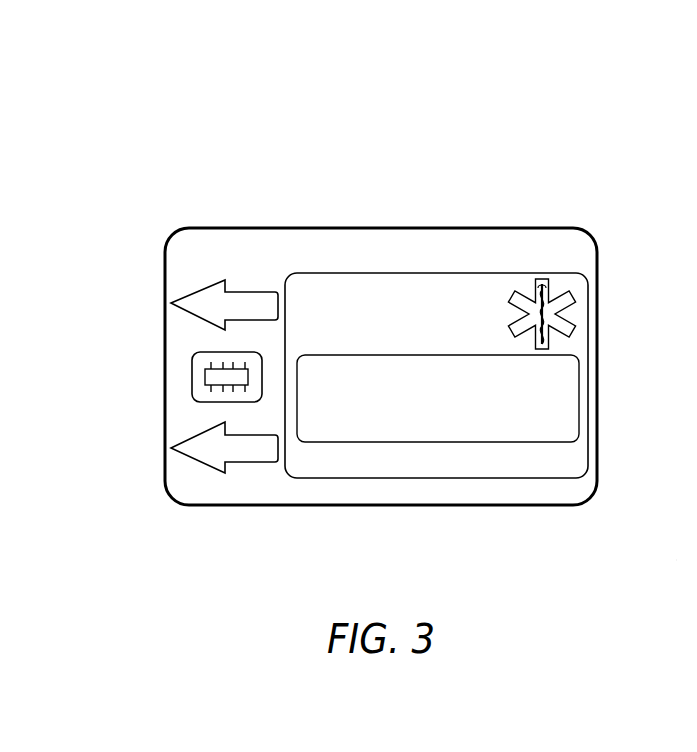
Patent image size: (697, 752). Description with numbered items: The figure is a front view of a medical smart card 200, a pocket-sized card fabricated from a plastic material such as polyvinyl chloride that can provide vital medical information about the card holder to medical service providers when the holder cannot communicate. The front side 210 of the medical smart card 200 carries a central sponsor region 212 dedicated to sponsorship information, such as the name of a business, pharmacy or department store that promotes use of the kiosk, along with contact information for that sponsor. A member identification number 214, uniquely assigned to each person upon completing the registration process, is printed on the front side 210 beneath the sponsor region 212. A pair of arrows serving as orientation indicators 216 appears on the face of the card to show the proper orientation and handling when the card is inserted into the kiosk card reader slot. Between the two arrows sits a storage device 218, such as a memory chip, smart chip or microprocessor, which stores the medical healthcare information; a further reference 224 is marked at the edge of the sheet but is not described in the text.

The medical smart card 200 is at (166, 140).
The front side 210 is at (563, 247).
The central sponsor region 212 is at (558, 370).
The member identification number 214 is at (532, 467).
The orientation indicators 216 is at (192, 302).
The storage device 218 is at (192, 377).
The element 224 is at (686, 558).